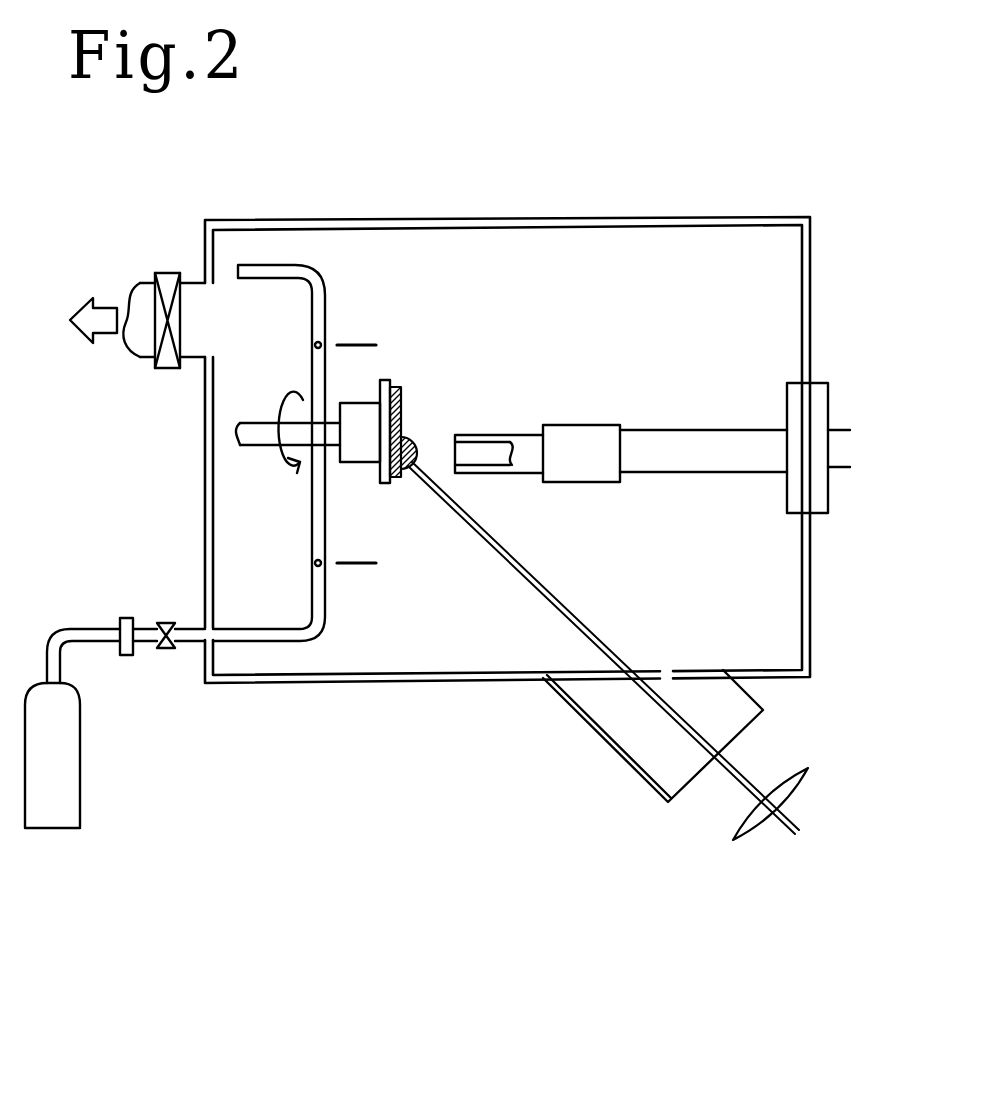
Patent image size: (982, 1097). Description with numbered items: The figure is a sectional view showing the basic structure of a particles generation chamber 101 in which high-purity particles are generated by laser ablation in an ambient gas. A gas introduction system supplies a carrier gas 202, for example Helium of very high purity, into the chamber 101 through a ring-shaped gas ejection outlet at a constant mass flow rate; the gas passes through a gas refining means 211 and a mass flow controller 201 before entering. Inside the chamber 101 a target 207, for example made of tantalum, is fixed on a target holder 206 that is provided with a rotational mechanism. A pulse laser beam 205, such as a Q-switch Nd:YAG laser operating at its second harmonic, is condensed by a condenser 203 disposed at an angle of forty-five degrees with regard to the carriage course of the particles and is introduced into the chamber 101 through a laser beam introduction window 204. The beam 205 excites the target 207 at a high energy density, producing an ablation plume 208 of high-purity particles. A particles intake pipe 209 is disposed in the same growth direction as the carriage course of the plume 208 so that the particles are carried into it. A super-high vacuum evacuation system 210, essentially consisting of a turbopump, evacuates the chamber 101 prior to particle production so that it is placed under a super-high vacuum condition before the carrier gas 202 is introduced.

The particles generation chamber 101 is at (250, 670).
The mass flow controller 201 is at (128, 618).
The carrier gas 202 is at (363, 565).
The condenser 203 is at (789, 780).
The laser beam introduction window 204 is at (675, 785).
The pulse laser beam 205 is at (788, 836).
The target holder 206 is at (383, 487).
The target 207 is at (390, 387).
The ablation plume 208 is at (403, 480).
The particles intake pipe 209 is at (472, 457).
The super-high vacuum evacuation system 210 is at (92, 338).
The gas refining means 211 is at (55, 785).